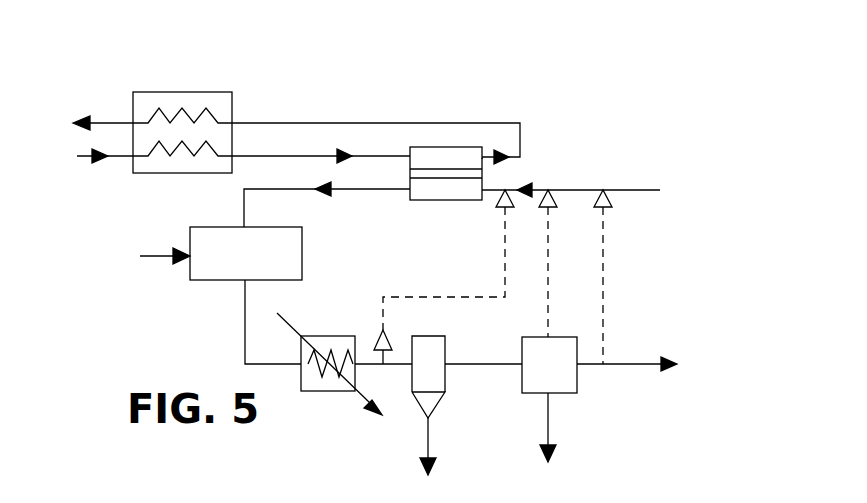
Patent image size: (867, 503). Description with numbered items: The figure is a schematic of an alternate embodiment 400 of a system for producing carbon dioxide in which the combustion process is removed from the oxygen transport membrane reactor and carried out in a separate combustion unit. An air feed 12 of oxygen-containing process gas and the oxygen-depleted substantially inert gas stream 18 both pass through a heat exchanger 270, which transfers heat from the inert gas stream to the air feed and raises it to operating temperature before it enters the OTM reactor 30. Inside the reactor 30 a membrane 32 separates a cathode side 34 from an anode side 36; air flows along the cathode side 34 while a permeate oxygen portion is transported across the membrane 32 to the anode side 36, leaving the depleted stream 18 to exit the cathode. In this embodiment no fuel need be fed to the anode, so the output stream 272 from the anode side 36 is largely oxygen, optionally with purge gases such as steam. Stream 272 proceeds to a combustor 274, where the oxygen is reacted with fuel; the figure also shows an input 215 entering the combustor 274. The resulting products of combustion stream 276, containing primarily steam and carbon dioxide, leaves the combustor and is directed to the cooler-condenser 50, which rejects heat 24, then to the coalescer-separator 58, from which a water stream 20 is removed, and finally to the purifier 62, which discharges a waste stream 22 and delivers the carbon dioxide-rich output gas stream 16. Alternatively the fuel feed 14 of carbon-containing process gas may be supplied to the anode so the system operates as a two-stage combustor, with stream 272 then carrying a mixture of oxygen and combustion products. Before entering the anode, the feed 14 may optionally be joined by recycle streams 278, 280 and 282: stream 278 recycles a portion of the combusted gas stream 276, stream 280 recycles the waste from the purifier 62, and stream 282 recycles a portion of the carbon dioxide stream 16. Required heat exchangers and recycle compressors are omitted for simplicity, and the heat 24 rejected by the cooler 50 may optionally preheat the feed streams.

The feed of oxygen-containing process gas 12 is at (79, 157).
The feed of carbon-containing process gas 14 is at (556, 190).
The output gas stream 16 is at (650, 362).
The oxygen-depleted substantially inert gas stream 18 is at (124, 122).
The water stream 20 is at (430, 447).
The waste stream 22 is at (549, 433).
The heat 24 is at (357, 400).
The OTM reactor 30 is at (452, 147).
The membrane 32 is at (443, 173).
The cathode side 34 is at (477, 141).
The anode side 36 is at (437, 196).
The cooler-condenser 50 is at (327, 336).
The coalescer-separator 58 is at (446, 348).
The purifier 62 is at (578, 352).
The combustor inlet 215 is at (160, 254).
The heat exchanger 270 is at (158, 92).
The output stream 272 is at (270, 191).
The combustor 274 is at (217, 282).
The products of combustion stream 276 is at (245, 332).
The recycle stream 278 is at (490, 265).
The recycle stream 280 is at (549, 249).
The recycle stream 282 is at (605, 302).
The alternate embodiment of a system 400 is at (652, 243).